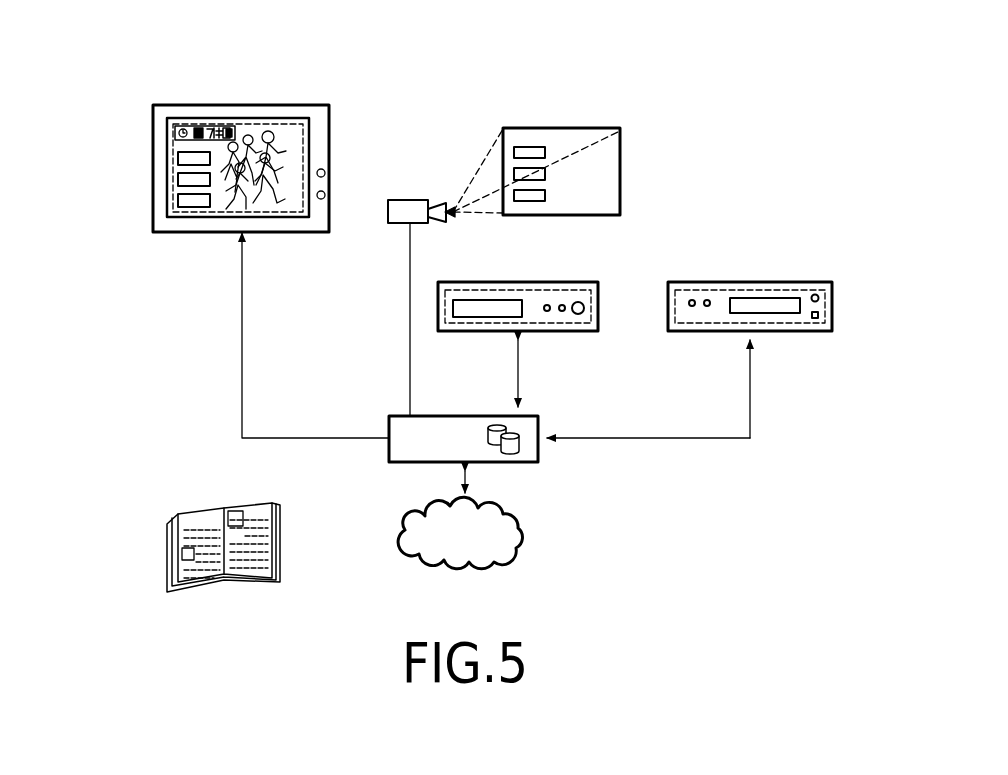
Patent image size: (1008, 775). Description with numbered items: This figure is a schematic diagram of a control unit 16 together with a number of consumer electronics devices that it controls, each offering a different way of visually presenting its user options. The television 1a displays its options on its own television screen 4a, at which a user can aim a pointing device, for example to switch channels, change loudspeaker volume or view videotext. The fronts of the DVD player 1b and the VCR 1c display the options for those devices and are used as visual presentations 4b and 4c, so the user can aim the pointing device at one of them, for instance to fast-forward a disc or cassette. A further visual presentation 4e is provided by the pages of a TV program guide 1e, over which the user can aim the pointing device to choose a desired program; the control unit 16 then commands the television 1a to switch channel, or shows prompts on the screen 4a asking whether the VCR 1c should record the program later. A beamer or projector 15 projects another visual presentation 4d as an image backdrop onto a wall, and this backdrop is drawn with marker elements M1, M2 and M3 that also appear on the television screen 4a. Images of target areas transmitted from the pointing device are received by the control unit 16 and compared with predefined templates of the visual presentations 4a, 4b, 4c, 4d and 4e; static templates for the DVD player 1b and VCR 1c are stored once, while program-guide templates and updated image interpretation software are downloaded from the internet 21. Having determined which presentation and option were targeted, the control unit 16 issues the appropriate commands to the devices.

The television 1a is at (240, 104).
The television screen 4a is at (300, 147).
The first marker M1 is at (535, 88).
The second marker M2 is at (636, 170).
The third marker M3 is at (529, 202).
The beamer or projector 15 is at (413, 198).
The visual presentation 4d is at (589, 128).
The DVD player 1b is at (568, 282).
The visual presentation 4b is at (577, 333).
The VCR 1c is at (797, 282).
The visual presentation 4c is at (810, 333).
The control unit 16 is at (461, 415).
The internet 21 is at (528, 527).
The TV program guide 1e is at (200, 512).
The visual presentation 4e is at (283, 545).